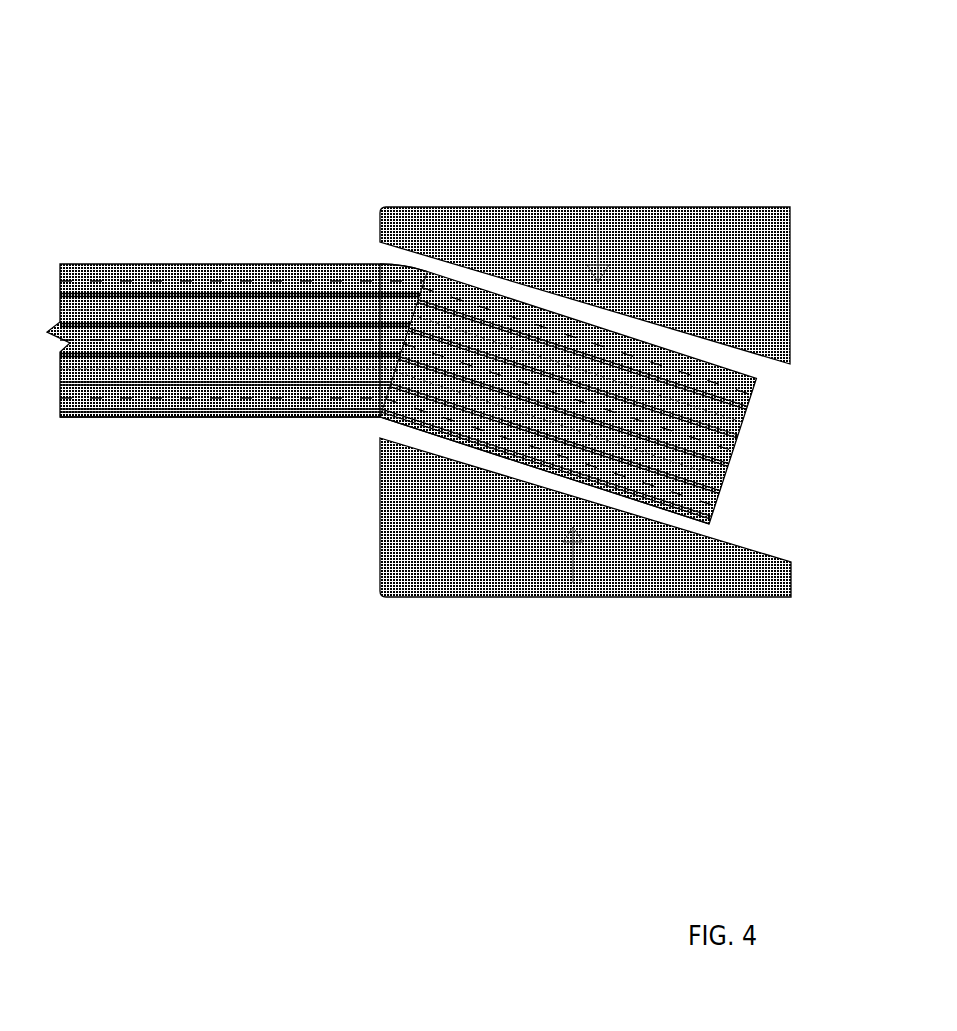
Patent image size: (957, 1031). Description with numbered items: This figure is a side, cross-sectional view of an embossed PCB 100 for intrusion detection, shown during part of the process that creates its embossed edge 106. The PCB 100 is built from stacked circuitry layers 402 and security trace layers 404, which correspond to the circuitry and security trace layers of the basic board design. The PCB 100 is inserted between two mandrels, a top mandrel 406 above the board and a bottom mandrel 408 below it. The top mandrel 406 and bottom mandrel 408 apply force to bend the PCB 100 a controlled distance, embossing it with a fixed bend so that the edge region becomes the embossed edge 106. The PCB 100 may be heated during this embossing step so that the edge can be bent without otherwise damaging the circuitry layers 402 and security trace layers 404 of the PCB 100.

The PCB 100 is at (288, 198).
The circuitry layers 402 is at (373, 413).
The security trace layers 404 is at (287, 398).
The embossed edge 106 is at (513, 462).
The top mandrel 406 is at (530, 228).
The bottom mandrel 408 is at (410, 545).